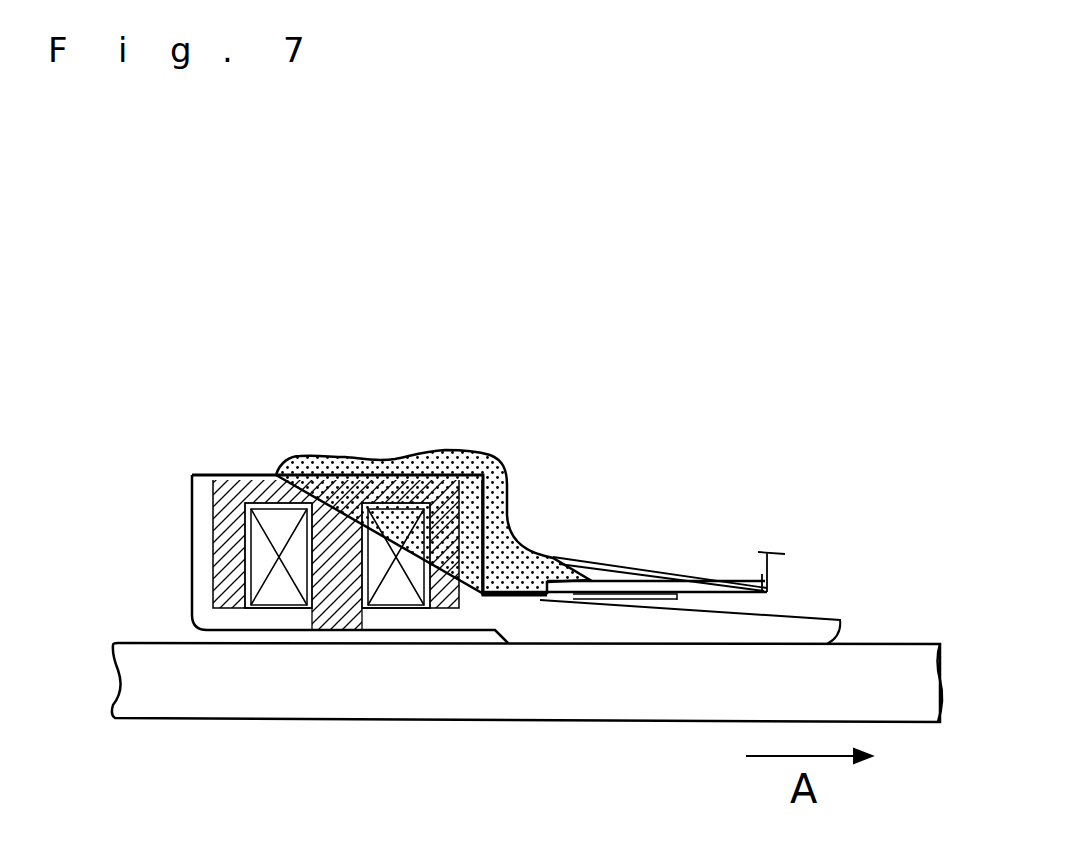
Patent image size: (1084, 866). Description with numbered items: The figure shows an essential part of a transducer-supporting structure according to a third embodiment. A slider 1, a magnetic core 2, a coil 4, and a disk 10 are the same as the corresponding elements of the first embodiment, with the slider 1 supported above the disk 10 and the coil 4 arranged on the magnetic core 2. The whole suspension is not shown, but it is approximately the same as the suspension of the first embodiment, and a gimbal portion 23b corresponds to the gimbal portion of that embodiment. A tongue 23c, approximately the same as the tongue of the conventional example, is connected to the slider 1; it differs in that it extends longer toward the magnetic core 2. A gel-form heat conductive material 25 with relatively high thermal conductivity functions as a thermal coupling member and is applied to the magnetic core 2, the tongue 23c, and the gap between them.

The slider 1 is at (800, 617).
The magnetic core 2 is at (250, 475).
The coil 4 is at (278, 522).
The disk 10 is at (468, 722).
The gimbal portion 23b is at (607, 562).
The tongue 23c is at (668, 582).
The heat conductive material 25 is at (405, 452).